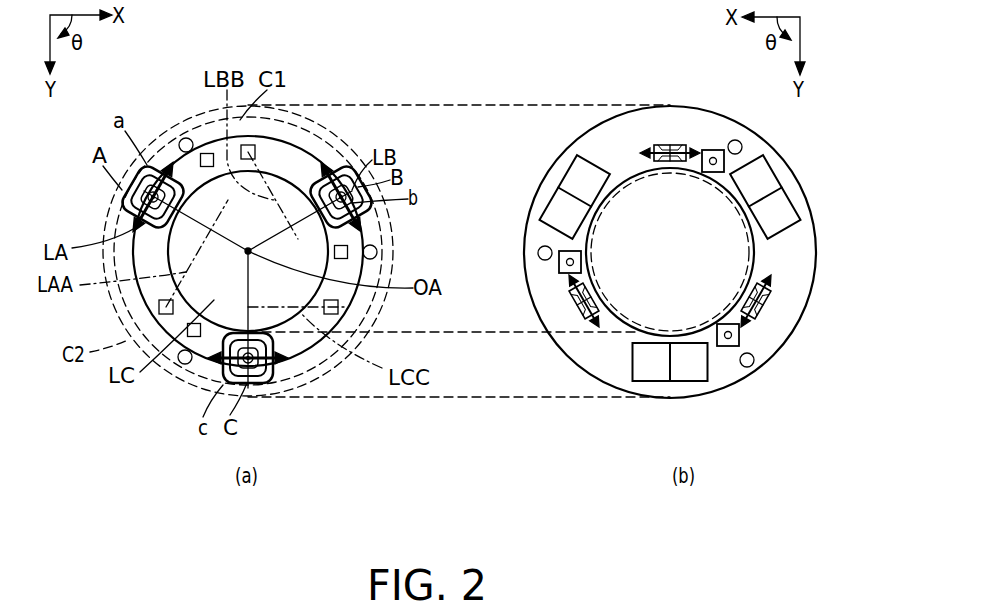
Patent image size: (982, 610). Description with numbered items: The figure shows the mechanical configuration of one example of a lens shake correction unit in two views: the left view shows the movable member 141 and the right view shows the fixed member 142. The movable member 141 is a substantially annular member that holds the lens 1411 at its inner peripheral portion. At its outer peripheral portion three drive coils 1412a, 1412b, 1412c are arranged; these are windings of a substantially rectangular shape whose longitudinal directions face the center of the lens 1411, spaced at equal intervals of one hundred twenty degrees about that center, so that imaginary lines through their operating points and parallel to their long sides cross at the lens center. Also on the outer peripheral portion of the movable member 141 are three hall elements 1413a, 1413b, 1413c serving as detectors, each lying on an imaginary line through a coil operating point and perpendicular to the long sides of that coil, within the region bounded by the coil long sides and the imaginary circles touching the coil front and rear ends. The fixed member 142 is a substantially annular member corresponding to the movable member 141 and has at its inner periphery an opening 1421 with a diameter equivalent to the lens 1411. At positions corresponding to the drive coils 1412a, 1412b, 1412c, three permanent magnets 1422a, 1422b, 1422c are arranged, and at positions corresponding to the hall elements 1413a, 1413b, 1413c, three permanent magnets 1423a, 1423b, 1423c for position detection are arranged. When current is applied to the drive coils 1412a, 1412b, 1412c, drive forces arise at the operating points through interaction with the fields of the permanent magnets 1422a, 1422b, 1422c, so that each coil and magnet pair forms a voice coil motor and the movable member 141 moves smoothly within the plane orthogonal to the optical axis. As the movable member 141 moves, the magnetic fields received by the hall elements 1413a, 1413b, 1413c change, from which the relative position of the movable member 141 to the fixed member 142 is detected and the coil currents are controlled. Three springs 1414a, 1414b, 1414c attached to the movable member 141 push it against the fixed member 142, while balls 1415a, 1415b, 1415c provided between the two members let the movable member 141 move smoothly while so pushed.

The movable member 141 is at (268, 137).
The fixed member 142 is at (113, 182).
The lens 1411 is at (302, 277).
The drive coil 1412a is at (123, 212).
The drive coil 1412b is at (362, 215).
The drive coil 1412c is at (258, 385).
The hall element 1413a is at (337, 315).
The hall element 1413b is at (159, 308).
The hall element 1413c is at (256, 152).
The spring 1414a is at (180, 365).
The spring 1414b is at (186, 138).
The spring 1414c is at (377, 252).
The ball 1415a is at (560, 268).
The ball 1415b is at (716, 150).
The ball 1415c is at (740, 342).
The opening 1421 is at (698, 315).
The permanent magnet 1422a is at (568, 178).
The permanent magnet 1422b is at (780, 177).
The permanent magnet 1422c is at (657, 381).
The permanent magnet for position detection 1423a is at (765, 313).
The permanent magnet for position detection 1423b is at (580, 310).
The permanent magnet for position detection 1423c is at (670, 144).